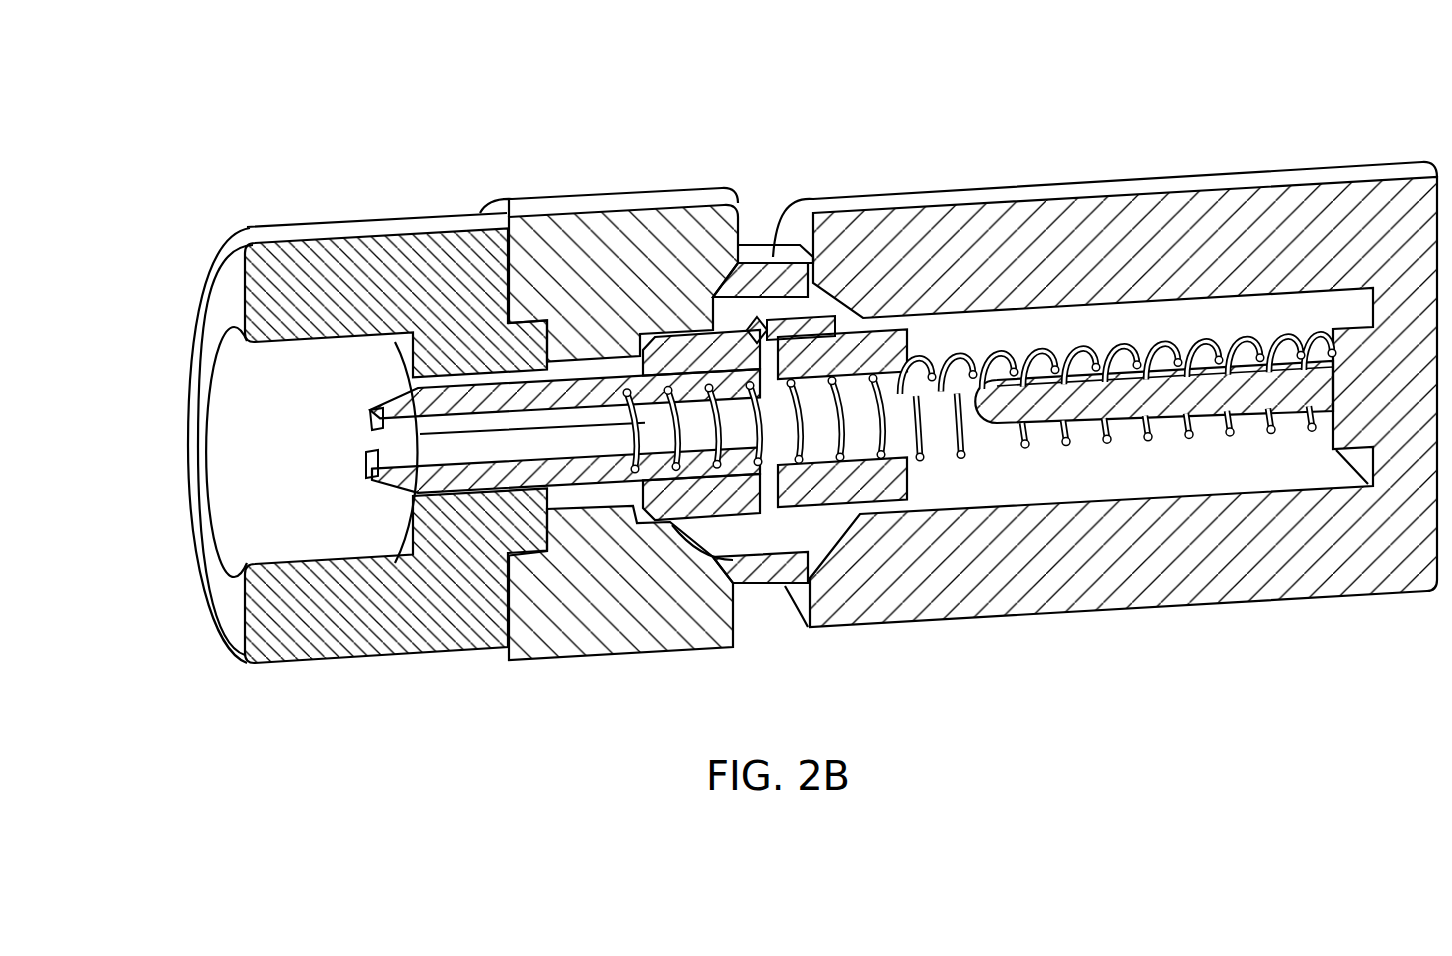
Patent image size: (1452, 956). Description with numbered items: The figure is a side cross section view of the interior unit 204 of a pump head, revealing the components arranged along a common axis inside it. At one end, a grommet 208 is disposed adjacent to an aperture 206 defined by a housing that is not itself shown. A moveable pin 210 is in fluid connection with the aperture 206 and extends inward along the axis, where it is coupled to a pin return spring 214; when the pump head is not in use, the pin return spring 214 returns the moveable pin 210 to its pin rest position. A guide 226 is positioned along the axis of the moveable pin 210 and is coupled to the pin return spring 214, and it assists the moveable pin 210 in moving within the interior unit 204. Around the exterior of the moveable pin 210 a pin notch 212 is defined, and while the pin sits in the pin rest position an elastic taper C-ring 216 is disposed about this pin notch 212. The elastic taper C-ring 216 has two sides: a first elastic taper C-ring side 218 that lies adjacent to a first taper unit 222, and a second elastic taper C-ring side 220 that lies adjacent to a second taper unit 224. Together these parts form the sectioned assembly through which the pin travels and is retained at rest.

The interior unit 204 is at (399, 123).
The aperture 206 is at (267, 449).
The grommet 208 is at (233, 230).
The moveable pin 210 is at (498, 430).
The pin notch 212 is at (757, 318).
The pin return spring 214 is at (963, 368).
The elastic taper C-ring 216 is at (778, 300).
The first elastic taper C-ring side 218 is at (723, 247).
The second elastic taper C-ring side 220 is at (812, 250).
The first taper unit 222 is at (611, 237).
The second taper unit 224 is at (1383, 192).
The guide 226 is at (1158, 400).